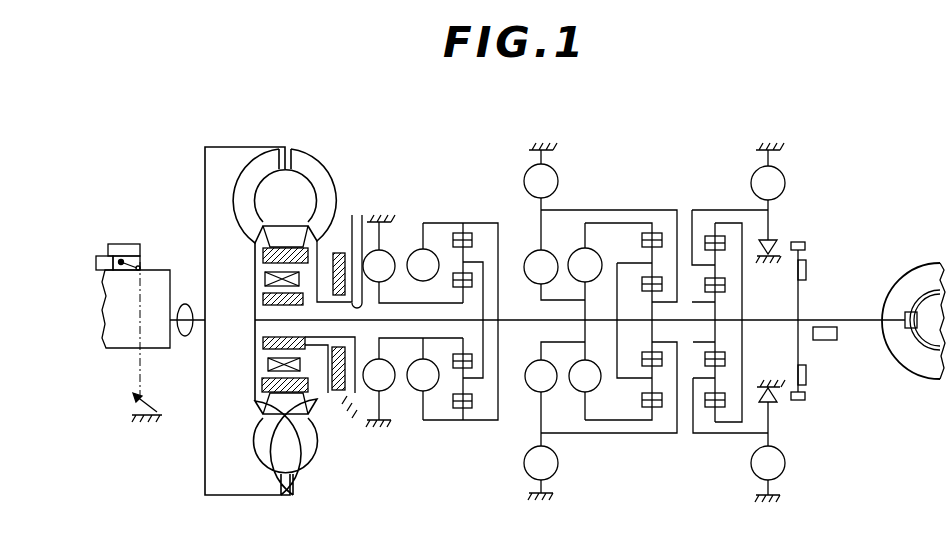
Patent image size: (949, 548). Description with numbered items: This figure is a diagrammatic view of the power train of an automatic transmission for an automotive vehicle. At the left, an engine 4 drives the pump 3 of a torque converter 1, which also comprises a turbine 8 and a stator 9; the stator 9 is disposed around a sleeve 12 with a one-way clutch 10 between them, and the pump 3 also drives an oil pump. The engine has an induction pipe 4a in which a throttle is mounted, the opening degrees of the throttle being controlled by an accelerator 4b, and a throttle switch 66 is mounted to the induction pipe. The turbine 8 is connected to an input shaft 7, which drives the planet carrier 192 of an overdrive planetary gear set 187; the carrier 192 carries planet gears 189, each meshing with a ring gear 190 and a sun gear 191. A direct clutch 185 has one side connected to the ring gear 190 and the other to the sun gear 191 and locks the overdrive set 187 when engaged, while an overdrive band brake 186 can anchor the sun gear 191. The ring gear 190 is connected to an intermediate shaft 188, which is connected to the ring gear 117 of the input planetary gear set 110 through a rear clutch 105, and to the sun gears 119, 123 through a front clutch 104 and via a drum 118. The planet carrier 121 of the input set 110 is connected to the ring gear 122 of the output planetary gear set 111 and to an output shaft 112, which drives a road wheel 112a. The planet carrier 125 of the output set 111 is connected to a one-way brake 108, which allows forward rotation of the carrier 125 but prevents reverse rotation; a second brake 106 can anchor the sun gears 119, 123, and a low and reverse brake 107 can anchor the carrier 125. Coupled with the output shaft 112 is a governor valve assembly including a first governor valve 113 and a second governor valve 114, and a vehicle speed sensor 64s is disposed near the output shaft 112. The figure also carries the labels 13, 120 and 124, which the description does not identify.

The torque converter 1 is at (322, 158).
The pump 3 is at (328, 184).
The engine 4 is at (111, 328).
The induction pipe 4a is at (140, 262).
The accelerator 4b is at (152, 404).
The input shaft 7 is at (405, 322).
The turbine 8 is at (263, 162).
The stator 9 is at (284, 226).
The one-way clutch 10 is at (263, 279).
The sleeve 12 is at (361, 222).
The lock-up clutch 13 is at (343, 250).
The vehicle speed sensor 64s is at (832, 340).
The throttle switch 66 is at (103, 257).
The front clutch 104 is at (552, 322).
The rear clutch 105 is at (578, 248).
The second brake 106 is at (556, 174).
The low and reverse brake 107 is at (785, 186).
The one-way brake 108 is at (775, 250).
The input planetary gear set 110 is at (654, 232).
The output planetary gear set 111 is at (730, 222).
The output shaft 112 is at (855, 320).
The road wheel 112a is at (912, 267).
The first governor valve 113 is at (807, 374).
The second governor valve 114 is at (807, 270).
The ring gear 117 is at (643, 239).
The drum 118 is at (637, 209).
The sun gear 119 is at (646, 304).
The planet gear 120 is at (668, 250).
The planet carrier 121 is at (606, 323).
The ring gear 122 is at (714, 234).
The sun gear 123 is at (736, 303).
The planet gear 124 is at (727, 282).
The planet carrier 125 is at (697, 303).
The direct clutch 185 is at (428, 249).
The overdrive band brake 186 is at (389, 253).
The overdrive planetary gear set 187 is at (472, 222).
The intermediate shaft 188 is at (536, 358).
The planet gears 189 is at (473, 242).
The ring gear 190 is at (458, 233).
The sun gear 191 is at (473, 281).
The planet carrier 192 is at (483, 270).